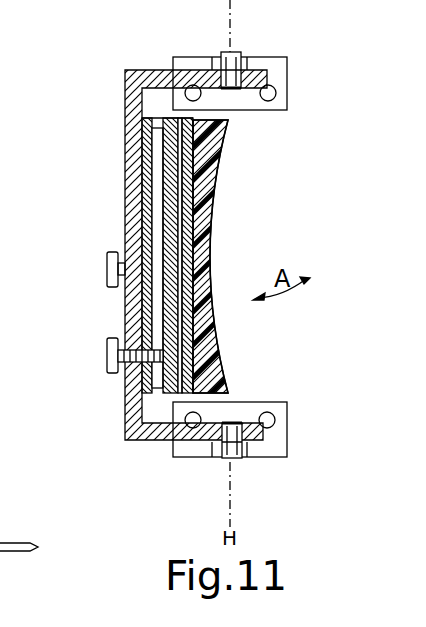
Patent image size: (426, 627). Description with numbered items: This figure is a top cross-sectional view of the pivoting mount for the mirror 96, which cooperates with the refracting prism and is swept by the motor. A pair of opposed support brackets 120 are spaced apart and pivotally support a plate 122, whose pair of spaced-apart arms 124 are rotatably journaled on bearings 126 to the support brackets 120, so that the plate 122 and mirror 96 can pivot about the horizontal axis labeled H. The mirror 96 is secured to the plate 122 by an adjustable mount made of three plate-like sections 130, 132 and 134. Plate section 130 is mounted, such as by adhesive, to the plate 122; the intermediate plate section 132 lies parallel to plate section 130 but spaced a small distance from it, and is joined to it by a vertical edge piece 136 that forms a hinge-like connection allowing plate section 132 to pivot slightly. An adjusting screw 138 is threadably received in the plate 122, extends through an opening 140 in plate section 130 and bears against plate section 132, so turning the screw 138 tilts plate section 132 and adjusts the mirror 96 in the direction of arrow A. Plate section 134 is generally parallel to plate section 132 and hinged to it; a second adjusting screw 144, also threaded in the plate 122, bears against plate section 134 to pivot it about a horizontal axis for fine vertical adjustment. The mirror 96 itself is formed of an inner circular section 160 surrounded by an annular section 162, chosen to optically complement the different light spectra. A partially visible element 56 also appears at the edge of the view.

The direction arrow 56 is at (19, 523).
The mirror 96 is at (237, 246).
The support brackets 120 is at (242, 57).
The plate 122 is at (133, 162).
The arms 124 is at (190, 68).
The bearings 126 is at (236, 85).
The plate section 130 is at (143, 187).
The intermediate plate section 132 is at (218, 170).
The plate section 134 is at (215, 328).
The vertical edge piece 136 is at (142, 96).
The adjusting screw 138 is at (105, 362).
The opening 140 is at (125, 402).
The adjusting screw 144 is at (105, 268).
The inner circular section 160 is at (251, 278).
The annular section 162 is at (222, 137).